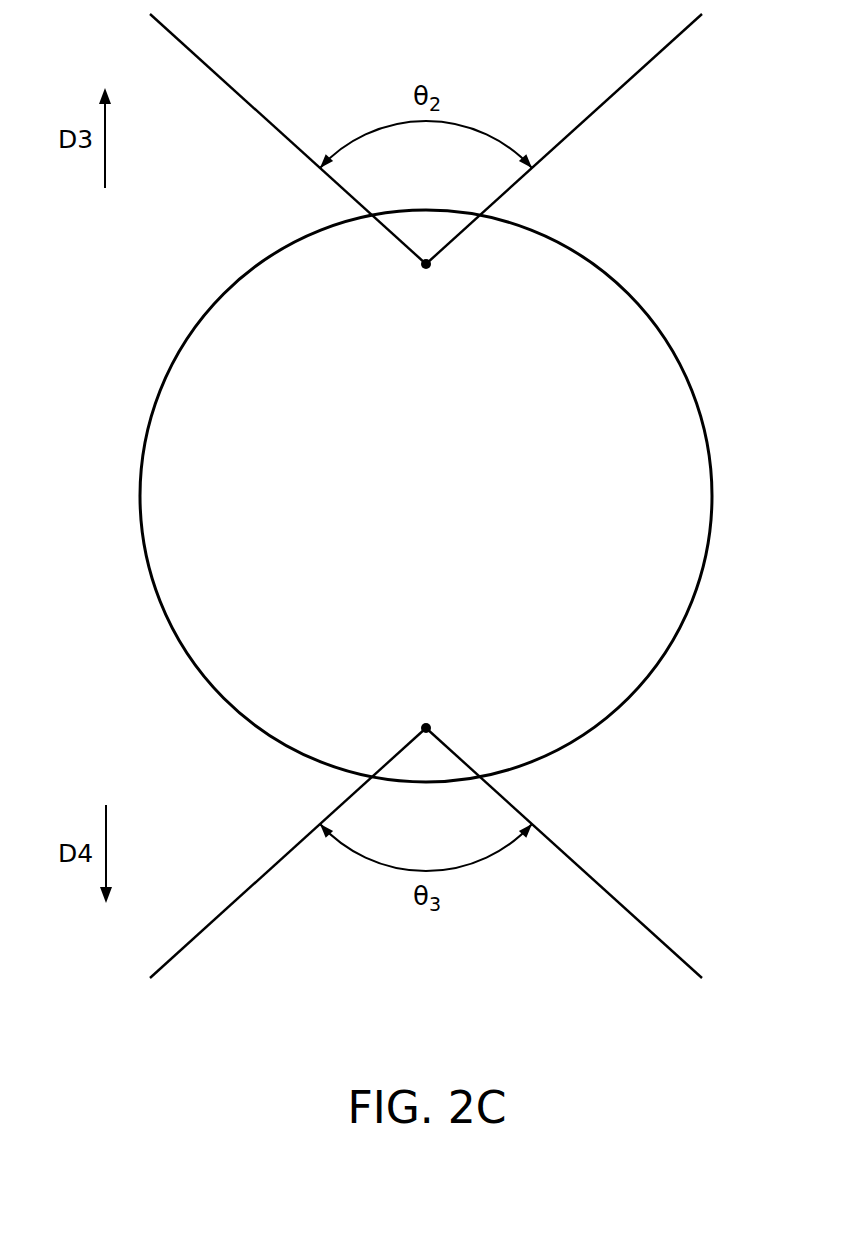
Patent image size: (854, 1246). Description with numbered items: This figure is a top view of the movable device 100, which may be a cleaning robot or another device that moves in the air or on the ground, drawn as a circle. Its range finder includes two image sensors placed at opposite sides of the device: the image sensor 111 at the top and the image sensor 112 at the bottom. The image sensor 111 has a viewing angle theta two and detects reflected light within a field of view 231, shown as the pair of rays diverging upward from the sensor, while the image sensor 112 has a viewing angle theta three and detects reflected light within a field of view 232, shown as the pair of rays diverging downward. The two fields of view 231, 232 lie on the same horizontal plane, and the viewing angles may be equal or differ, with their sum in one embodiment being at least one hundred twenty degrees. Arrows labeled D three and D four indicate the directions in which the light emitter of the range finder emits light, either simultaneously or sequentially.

The movable device 100 is at (401, 511).
The image sensor 111 is at (426, 273).
The image sensor 112 is at (426, 719).
The field of view 231 is at (402, 43).
The field of view 232 is at (402, 979).